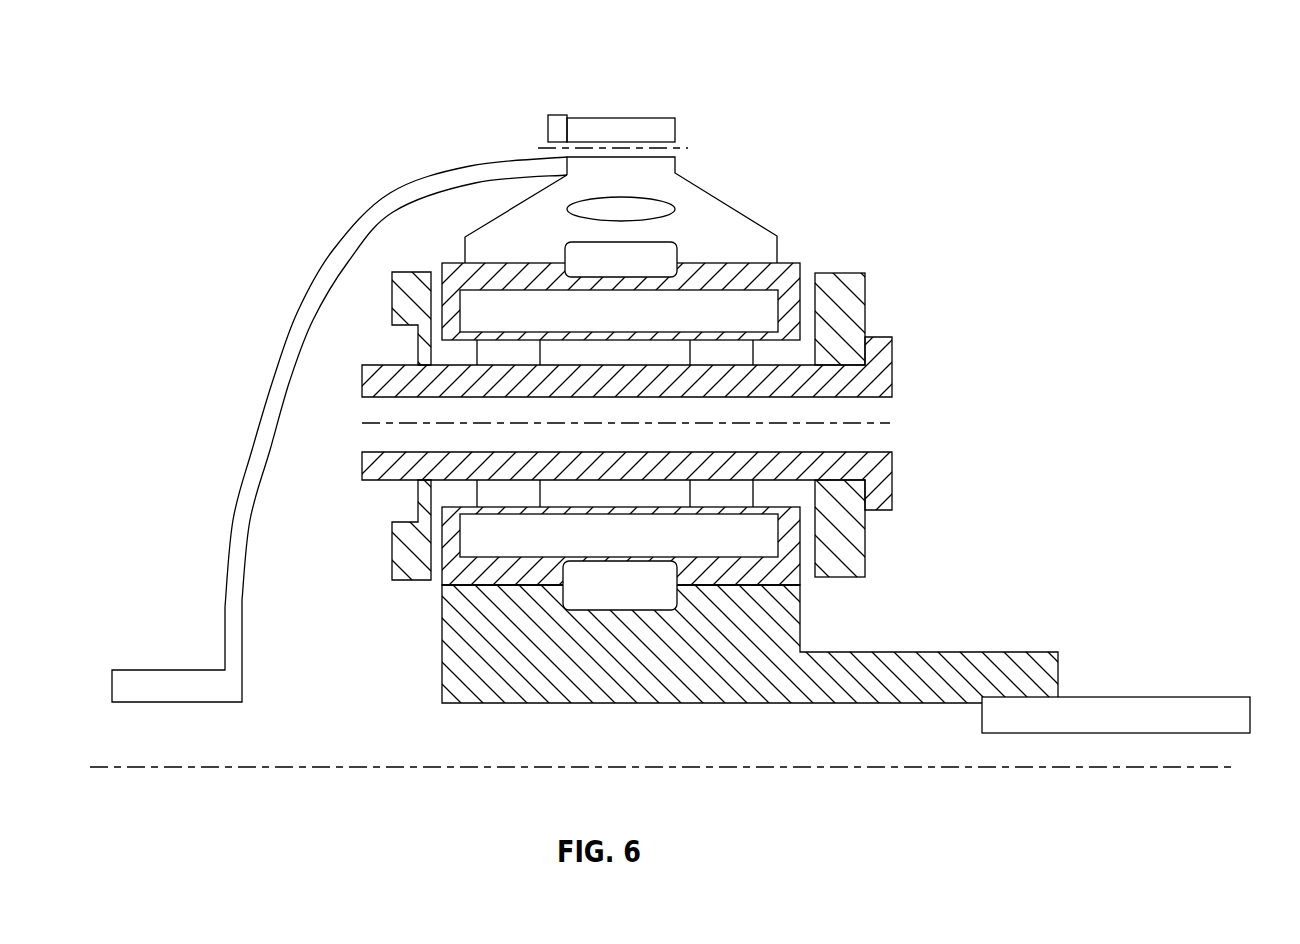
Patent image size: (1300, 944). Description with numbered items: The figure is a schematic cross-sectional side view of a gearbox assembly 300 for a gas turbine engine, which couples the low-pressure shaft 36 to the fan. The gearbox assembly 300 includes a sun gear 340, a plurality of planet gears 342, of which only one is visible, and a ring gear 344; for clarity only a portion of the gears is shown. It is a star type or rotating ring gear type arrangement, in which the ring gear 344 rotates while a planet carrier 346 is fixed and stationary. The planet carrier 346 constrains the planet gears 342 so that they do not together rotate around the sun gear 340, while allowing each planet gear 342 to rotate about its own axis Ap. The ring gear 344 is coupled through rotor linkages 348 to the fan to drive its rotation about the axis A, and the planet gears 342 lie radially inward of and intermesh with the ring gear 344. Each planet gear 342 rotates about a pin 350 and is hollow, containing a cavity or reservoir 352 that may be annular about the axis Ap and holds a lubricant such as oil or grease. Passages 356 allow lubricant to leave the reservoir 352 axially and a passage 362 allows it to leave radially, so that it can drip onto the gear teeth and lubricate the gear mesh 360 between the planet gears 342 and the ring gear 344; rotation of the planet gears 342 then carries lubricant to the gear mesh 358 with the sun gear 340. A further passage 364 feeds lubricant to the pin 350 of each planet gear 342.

The gearbox assembly 300 is at (128, 62).
The low-pressure shaft 36 is at (1232, 735).
The sun gear 340 is at (442, 678).
The planet gears 342 is at (800, 273).
The ring gear 344 is at (726, 200).
The planet carrier 346 is at (392, 287).
The rotor linkages 348 is at (247, 470).
The pin 350 is at (882, 373).
The reservoir 352 is at (755, 298).
The passages 356 is at (450, 307).
The gear mesh 358 is at (427, 599).
The gear mesh 360 is at (449, 237).
The passage 362 is at (597, 289).
The passage 364 is at (633, 338).
The axis A is at (1160, 770).
The planet gear axis Ap is at (890, 425).